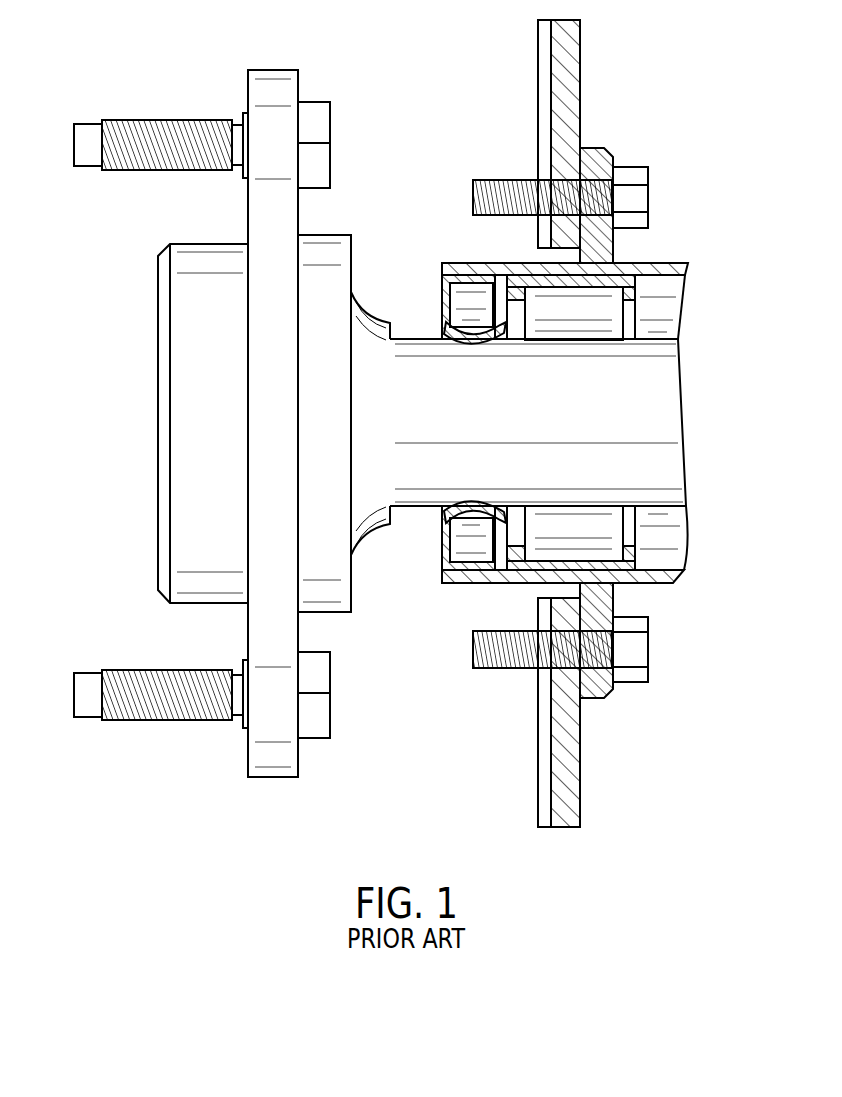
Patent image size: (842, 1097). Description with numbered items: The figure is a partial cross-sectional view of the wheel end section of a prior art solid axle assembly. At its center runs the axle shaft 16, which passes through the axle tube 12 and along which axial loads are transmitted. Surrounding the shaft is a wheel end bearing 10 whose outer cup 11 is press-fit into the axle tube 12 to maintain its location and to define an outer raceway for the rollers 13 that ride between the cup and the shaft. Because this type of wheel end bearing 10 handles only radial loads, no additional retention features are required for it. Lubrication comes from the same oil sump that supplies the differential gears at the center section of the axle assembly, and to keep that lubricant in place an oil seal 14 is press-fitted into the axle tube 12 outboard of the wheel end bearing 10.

The wheel end bearing 10 is at (652, 311).
The outer cup 11 is at (637, 550).
The axle tube 12 is at (667, 263).
The rollers 13 is at (625, 532).
The oil seal 14 is at (441, 545).
The axle shaft 16 is at (564, 421).